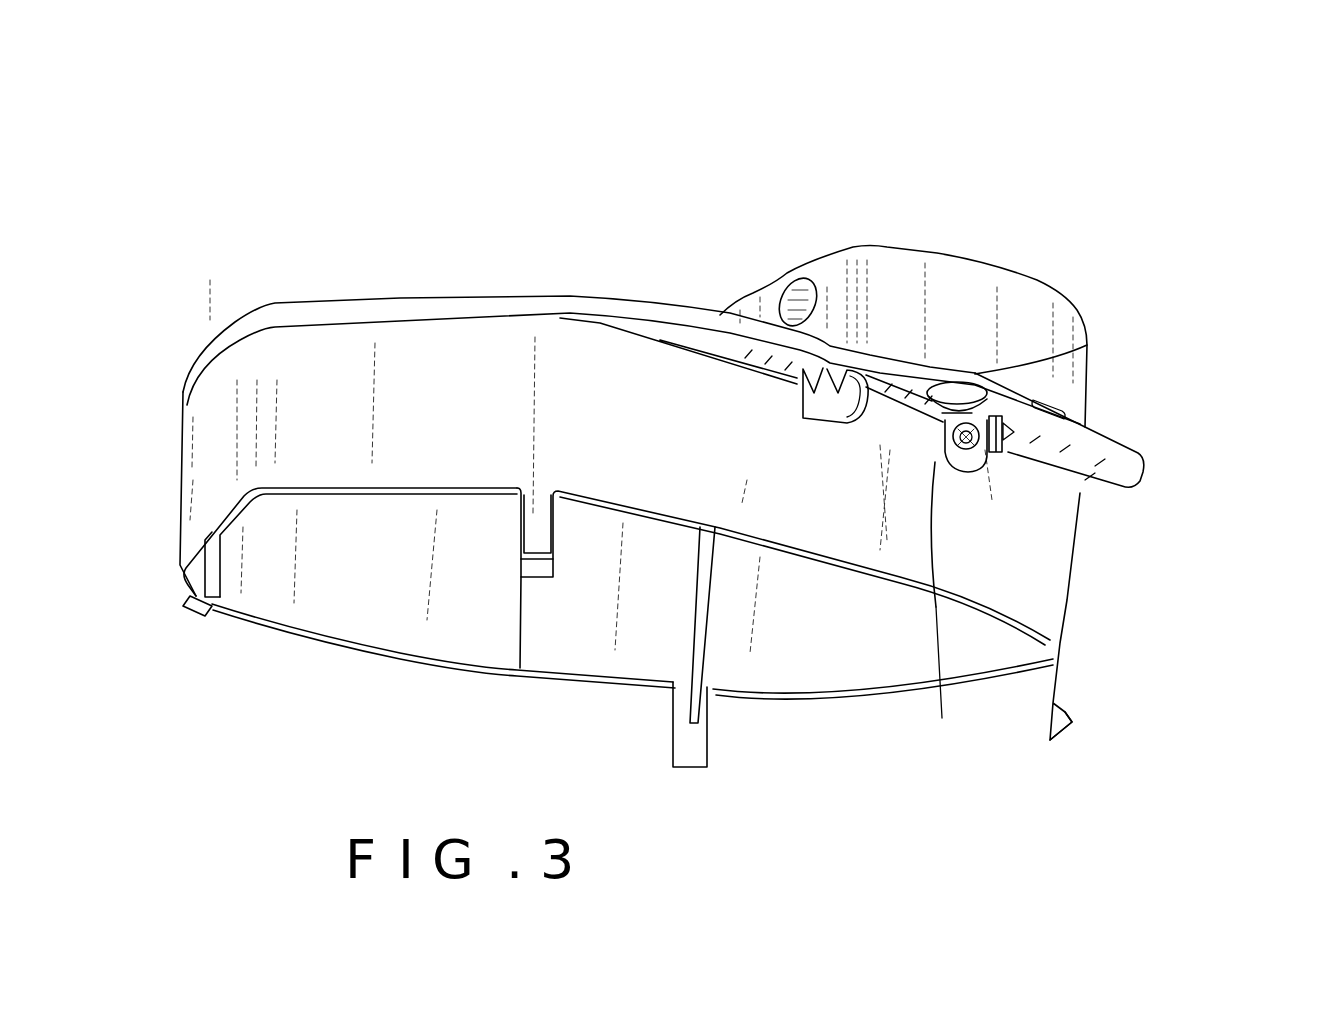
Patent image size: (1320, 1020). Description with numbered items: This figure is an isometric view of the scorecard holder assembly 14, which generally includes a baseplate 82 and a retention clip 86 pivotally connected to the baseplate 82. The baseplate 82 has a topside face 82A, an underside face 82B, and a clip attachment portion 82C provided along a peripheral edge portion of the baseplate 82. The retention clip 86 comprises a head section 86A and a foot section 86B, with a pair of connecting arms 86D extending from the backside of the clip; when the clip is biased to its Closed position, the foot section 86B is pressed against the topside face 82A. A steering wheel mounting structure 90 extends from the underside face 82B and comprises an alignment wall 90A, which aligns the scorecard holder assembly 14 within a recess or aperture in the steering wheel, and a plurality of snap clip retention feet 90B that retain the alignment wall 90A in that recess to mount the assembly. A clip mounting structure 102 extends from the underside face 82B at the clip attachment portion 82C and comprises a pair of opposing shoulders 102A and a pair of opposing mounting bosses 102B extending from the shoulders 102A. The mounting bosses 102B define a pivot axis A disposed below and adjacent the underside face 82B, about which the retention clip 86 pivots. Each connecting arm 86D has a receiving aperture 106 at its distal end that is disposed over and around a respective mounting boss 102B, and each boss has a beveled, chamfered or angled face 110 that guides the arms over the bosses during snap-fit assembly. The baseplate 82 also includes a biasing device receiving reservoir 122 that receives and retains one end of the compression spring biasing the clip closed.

The scorecard holder assembly 14 is at (496, 133).
The baseplate 82 is at (402, 297).
The topside face 82A is at (447, 297).
The underside face 82B is at (680, 327).
The clip attachment portion 82C is at (1110, 490).
The retention clip 86 is at (1008, 230).
The head section 86A is at (1028, 320).
The foot section 86B is at (753, 310).
The connecting arms 86D is at (857, 470).
The steering wheel mounting structure 90 is at (1081, 579).
The alignment wall 90A is at (880, 543).
The snap clip retention feet 90B is at (188, 603).
The clip mounting structure 102 is at (985, 462).
The shoulders 102A is at (1008, 456).
The mounting bosses 102B is at (945, 678).
The receiving aperture 106 is at (991, 487).
The beveled, chamfered or angled face 110 is at (990, 417).
The biasing device receiving reservoir 122 is at (923, 378).
The pivot axis A is at (1085, 478).